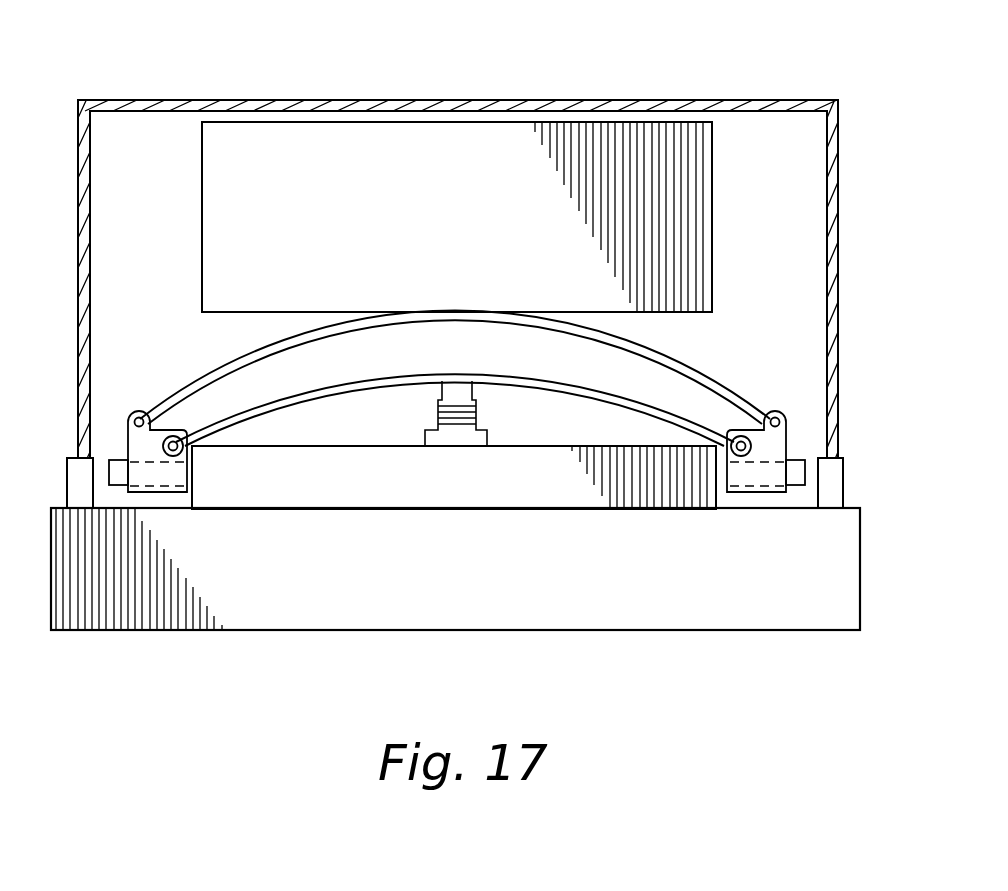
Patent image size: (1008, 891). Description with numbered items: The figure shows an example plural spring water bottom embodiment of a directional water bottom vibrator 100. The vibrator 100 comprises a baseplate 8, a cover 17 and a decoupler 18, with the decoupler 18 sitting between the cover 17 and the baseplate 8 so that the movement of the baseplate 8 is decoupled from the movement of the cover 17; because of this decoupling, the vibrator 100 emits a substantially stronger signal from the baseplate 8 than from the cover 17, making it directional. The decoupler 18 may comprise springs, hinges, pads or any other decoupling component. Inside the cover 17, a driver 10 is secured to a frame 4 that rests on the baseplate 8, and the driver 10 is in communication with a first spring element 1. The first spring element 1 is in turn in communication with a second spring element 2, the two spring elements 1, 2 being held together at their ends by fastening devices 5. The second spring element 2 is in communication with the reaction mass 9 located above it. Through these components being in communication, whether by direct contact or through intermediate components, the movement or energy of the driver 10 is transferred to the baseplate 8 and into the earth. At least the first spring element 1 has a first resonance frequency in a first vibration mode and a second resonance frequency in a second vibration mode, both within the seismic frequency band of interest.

The directional water bottom vibrator 100 is at (722, 54).
The cover 17 is at (839, 253).
The reaction mass 9 is at (713, 209).
The second spring element 2 is at (226, 356).
The first spring element 1 is at (371, 378).
The driver 10 is at (478, 414).
The frame 4 is at (391, 444).
The fastening device 5 is at (172, 493).
The decoupler 18 is at (845, 478).
The baseplate 8 is at (862, 564).